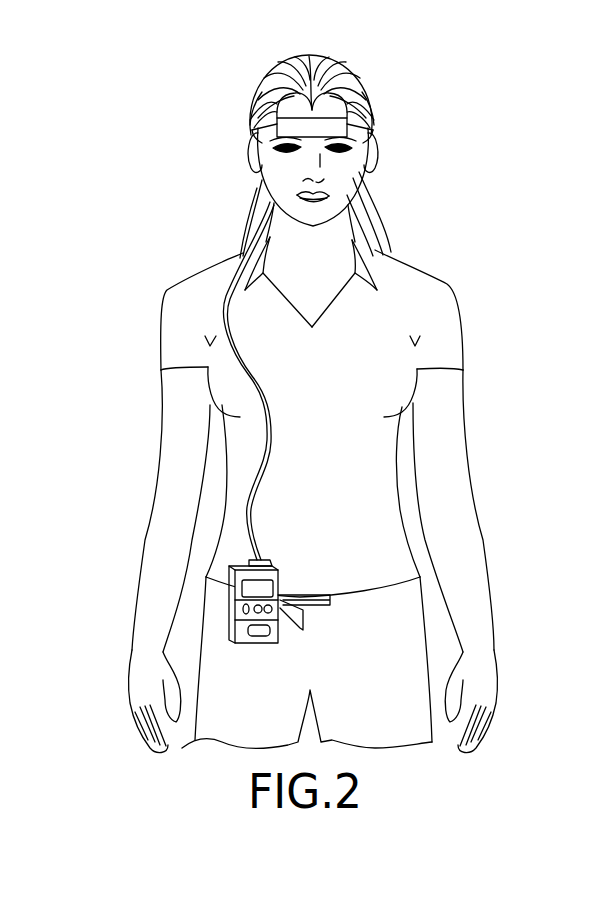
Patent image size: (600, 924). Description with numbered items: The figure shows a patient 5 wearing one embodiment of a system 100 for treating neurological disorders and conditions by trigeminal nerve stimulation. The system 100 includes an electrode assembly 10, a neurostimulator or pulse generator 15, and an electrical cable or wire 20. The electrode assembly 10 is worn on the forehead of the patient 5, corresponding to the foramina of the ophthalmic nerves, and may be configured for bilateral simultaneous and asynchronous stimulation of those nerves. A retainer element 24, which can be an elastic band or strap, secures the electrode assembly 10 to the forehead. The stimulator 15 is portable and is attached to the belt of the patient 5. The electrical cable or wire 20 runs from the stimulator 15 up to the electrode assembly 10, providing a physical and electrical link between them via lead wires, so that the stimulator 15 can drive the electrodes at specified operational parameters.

The patient 5 is at (377, 70).
The electrode assembly 10 is at (311, 106).
The neurostimulator or pulse generator 15 is at (241, 648).
The electrical cable or wire 20 is at (268, 405).
The retainer element 24 is at (257, 129).
The system 100 is at (153, 318).